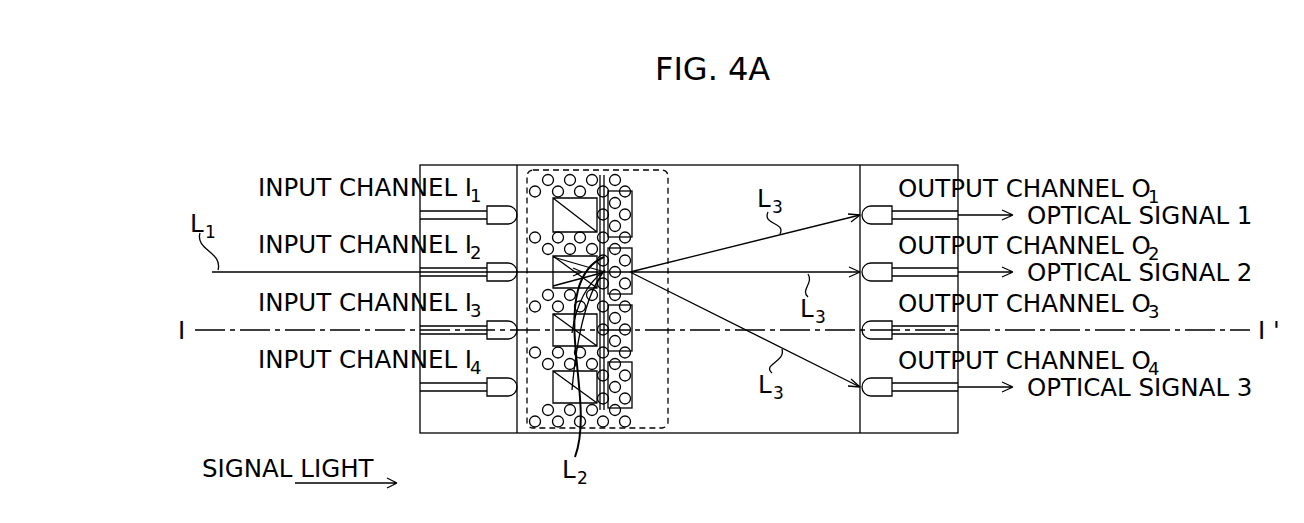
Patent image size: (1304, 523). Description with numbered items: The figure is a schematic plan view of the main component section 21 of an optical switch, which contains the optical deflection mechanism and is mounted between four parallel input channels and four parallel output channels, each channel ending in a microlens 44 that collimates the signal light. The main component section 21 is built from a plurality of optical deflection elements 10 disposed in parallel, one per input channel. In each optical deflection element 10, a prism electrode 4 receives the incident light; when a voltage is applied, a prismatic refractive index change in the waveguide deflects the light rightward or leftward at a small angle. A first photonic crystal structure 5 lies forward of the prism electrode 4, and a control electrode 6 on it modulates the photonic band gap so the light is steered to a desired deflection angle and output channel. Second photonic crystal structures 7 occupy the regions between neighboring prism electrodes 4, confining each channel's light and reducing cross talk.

The main component section 21 is at (955, 150).
The microlens 44 is at (503, 212).
The second photonic crystal structure 7 is at (560, 170).
The optical deflection element 10 is at (648, 305).
The prism electrode 4 is at (590, 203).
The first photonic crystal structure 5 is at (627, 170).
The control electrode 6 is at (633, 212).